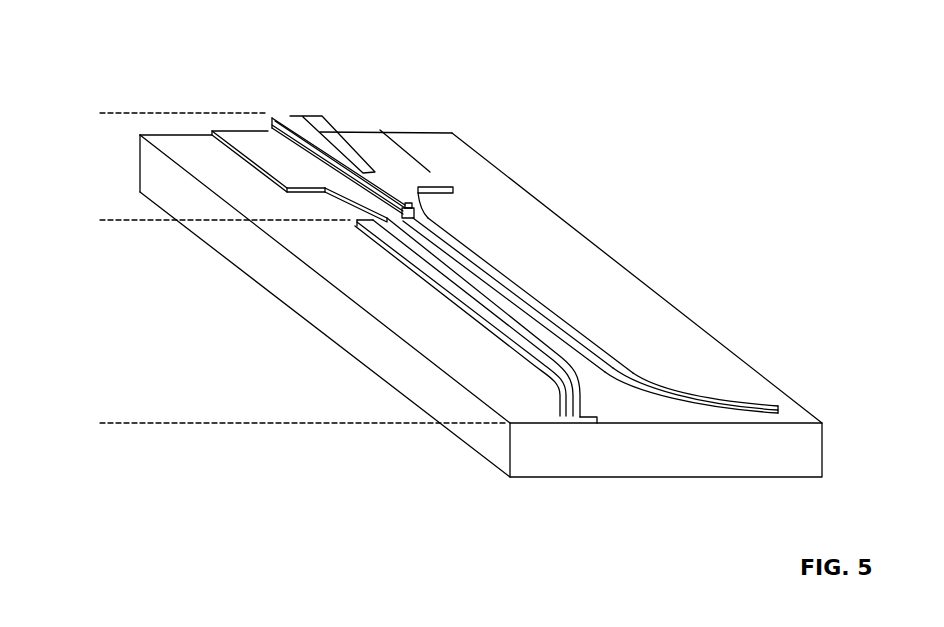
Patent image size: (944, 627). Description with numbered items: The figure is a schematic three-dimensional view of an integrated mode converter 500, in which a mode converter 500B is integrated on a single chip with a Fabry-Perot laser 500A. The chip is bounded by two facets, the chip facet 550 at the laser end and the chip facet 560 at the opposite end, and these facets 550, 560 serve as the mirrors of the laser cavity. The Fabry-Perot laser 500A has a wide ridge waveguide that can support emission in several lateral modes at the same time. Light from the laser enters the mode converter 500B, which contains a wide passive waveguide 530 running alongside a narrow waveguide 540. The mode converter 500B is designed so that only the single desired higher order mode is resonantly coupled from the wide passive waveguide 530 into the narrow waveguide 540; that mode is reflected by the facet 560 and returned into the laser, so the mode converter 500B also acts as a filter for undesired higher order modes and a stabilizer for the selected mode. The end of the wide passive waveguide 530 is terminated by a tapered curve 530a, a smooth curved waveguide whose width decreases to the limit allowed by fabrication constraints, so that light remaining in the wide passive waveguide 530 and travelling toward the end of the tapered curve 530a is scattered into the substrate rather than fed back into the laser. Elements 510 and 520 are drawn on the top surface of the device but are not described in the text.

The integrated mode converter 500 is at (748, 134).
The Fabry-Perot laser 500A is at (97, 113).
The mode converter 500B is at (97, 220).
The rib waveguide taper 510 is at (325, 131).
The upper cladding slab 520 is at (392, 184).
The wide passive waveguide 530 is at (477, 272).
The tapered curve 530a is at (660, 387).
The narrow waveguide 540 is at (437, 273).
The chip facet 550 is at (136, 153).
The chip facet 560 is at (537, 461).